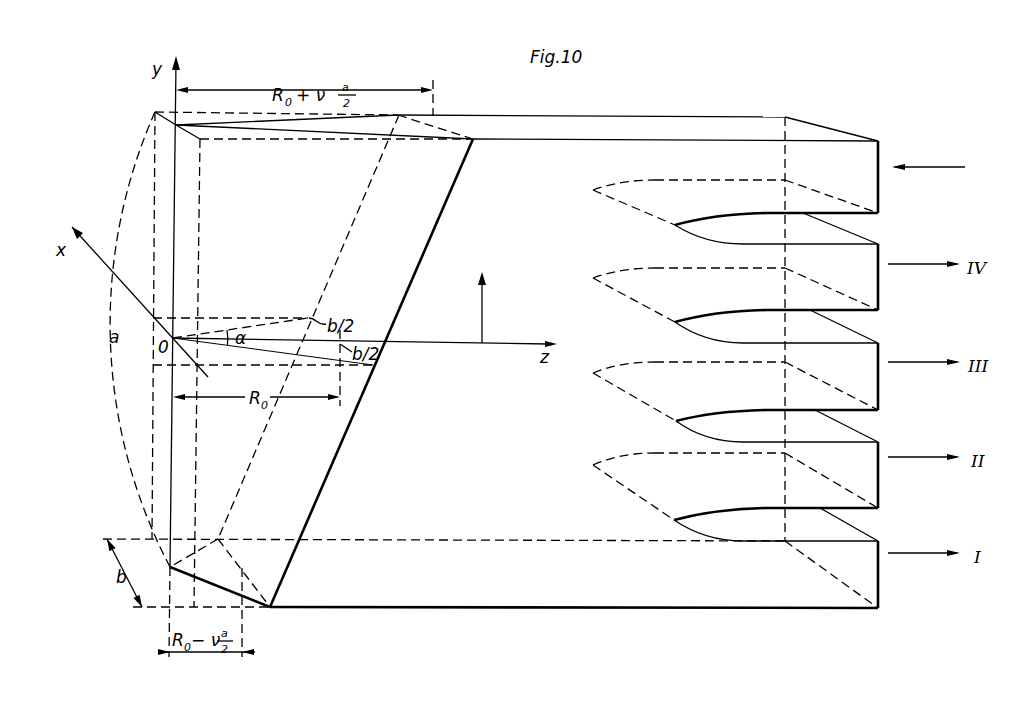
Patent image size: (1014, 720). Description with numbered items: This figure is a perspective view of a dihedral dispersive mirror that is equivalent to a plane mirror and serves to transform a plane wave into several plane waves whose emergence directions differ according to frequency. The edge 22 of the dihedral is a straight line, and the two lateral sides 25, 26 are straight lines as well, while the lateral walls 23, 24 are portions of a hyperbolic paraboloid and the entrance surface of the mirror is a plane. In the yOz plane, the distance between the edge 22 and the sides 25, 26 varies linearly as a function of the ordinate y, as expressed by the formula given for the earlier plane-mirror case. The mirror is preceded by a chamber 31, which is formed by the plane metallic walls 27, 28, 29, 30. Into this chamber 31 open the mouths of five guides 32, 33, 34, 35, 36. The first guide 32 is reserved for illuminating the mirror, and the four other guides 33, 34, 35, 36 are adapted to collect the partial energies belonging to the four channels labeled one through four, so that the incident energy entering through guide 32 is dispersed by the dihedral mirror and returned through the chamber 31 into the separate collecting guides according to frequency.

The edge 22 is at (172, 246).
The lateral wall 23 is at (385, 117).
The lateral wall 24 is at (466, 150).
The lateral side 25 is at (370, 183).
The lateral side 26 is at (432, 235).
The plane metallic wall 27 is at (537, 143).
The plane metallic wall 28 is at (560, 541).
The plane metallic wall 29 is at (601, 120).
The plane metallic wall 30 is at (642, 572).
The chamber 31 is at (498, 425).
The guide 32 is at (872, 198).
The guide 33 is at (873, 301).
The guide 34 is at (873, 398).
The guide 35 is at (873, 493).
The guide 36 is at (873, 588).